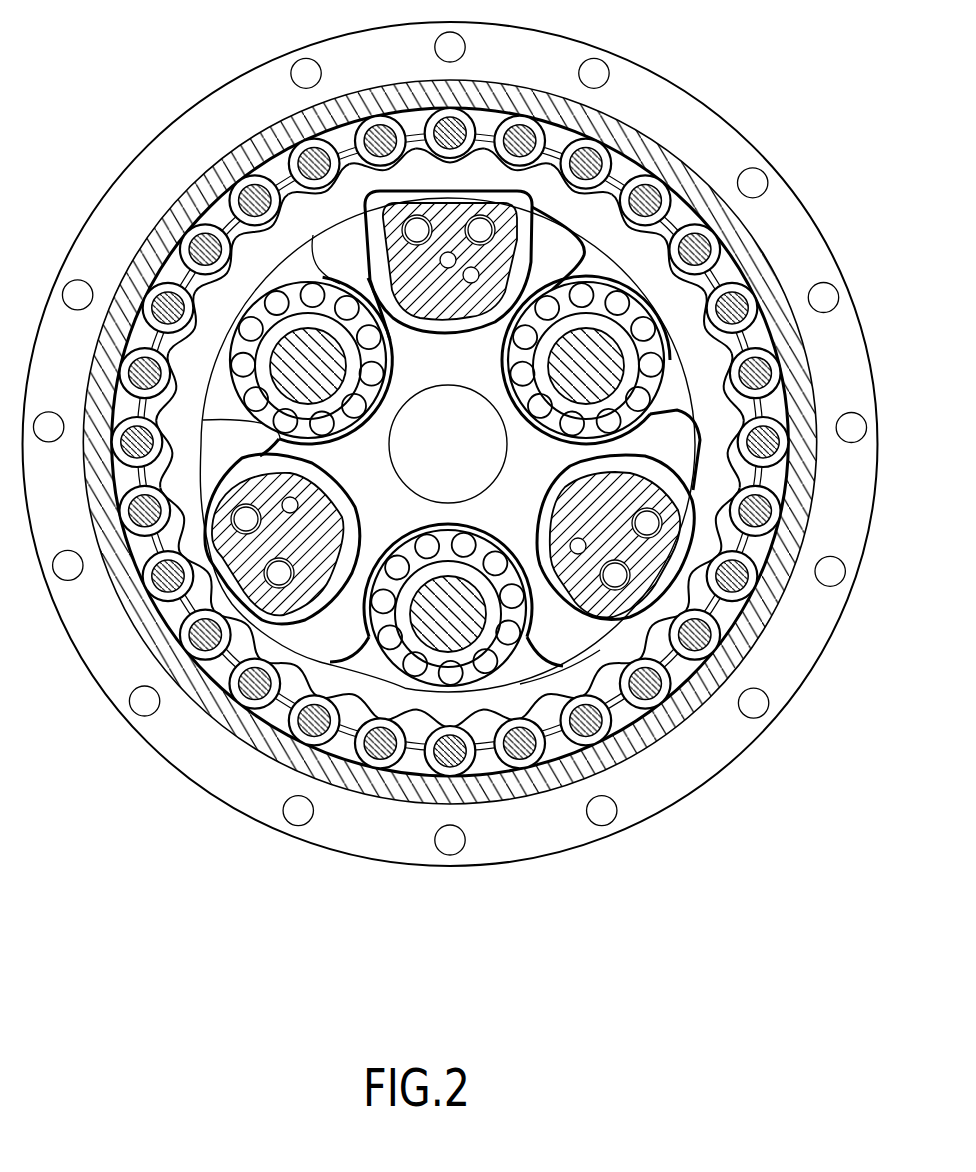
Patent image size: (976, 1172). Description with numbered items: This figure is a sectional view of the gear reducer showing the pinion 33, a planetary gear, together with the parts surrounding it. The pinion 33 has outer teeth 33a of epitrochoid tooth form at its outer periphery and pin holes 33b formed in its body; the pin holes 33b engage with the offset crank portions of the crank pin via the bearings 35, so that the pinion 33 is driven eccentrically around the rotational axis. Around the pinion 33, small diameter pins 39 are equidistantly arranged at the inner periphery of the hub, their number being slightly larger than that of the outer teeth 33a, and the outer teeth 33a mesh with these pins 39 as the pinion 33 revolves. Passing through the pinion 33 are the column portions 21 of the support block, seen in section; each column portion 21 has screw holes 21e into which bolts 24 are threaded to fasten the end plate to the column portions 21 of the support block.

The column portion 21 is at (646, 560).
The screw hole 21e is at (647, 521).
The bolt 24 is at (615, 582).
The pinion 33 is at (503, 702).
The outer teeth 33a is at (563, 690).
The pin hole 33b is at (373, 647).
The bearing 35 is at (455, 672).
The small diameter pin 39 is at (379, 745).